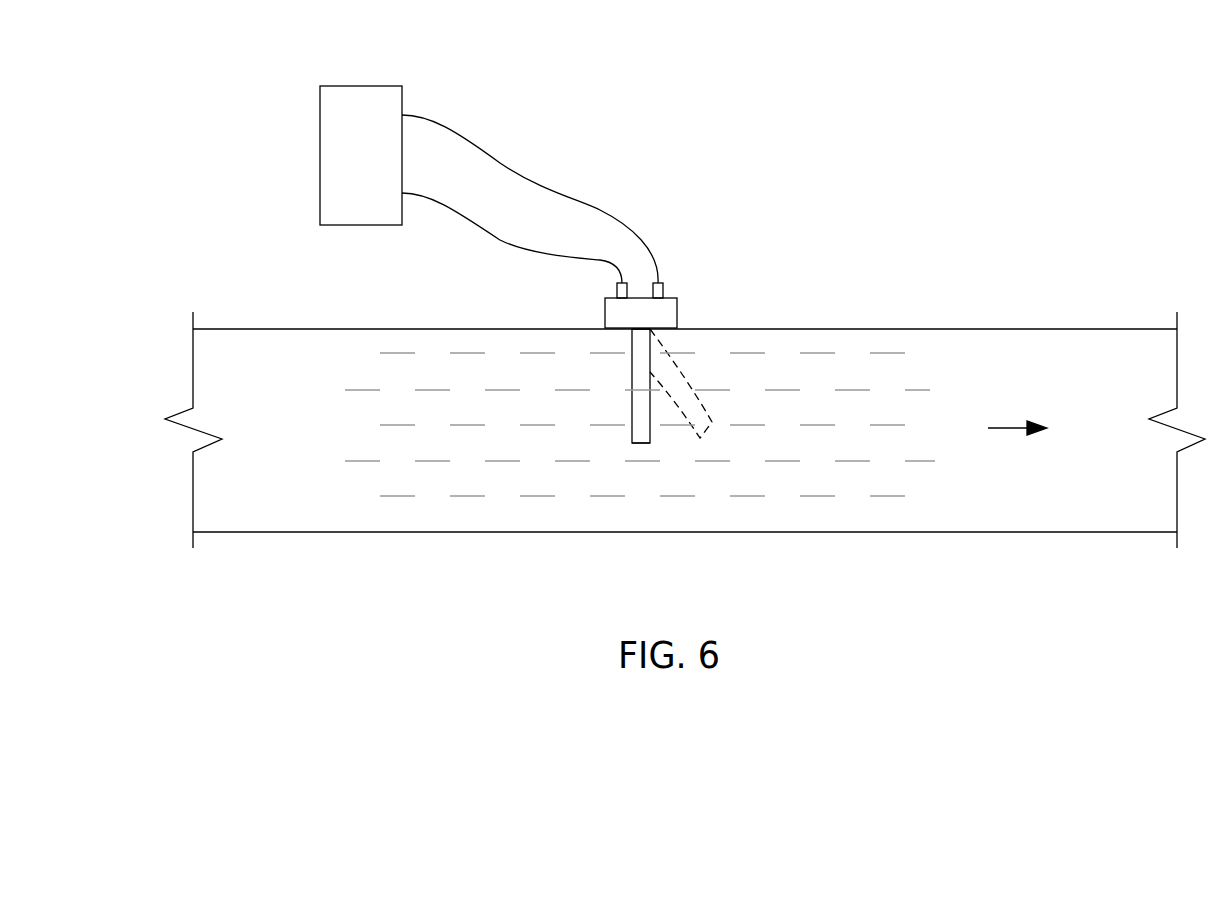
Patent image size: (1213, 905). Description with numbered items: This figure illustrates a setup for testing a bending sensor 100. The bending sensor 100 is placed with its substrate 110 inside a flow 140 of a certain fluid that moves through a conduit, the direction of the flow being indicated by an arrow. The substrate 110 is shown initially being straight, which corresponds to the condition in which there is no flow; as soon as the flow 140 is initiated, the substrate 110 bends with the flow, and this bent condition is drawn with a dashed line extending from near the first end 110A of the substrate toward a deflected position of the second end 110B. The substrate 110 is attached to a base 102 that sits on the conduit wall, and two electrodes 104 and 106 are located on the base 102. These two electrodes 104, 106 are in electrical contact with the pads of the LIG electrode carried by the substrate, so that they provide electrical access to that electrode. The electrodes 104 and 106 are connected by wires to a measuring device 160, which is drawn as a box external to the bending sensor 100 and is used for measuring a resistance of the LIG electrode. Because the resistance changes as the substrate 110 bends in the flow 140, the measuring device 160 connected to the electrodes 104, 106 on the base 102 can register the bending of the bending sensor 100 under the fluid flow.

The bending sensor 100 is at (680, 170).
The base 102 is at (667, 302).
The electrode 104 is at (617, 291).
The electrode 106 is at (664, 290).
The substrate 110 is at (632, 398).
The first end of sensing element 110A is at (632, 330).
The second end of sensing element 110B is at (640, 445).
The flow 140 is at (813, 497).
The measuring device 160 is at (362, 85).